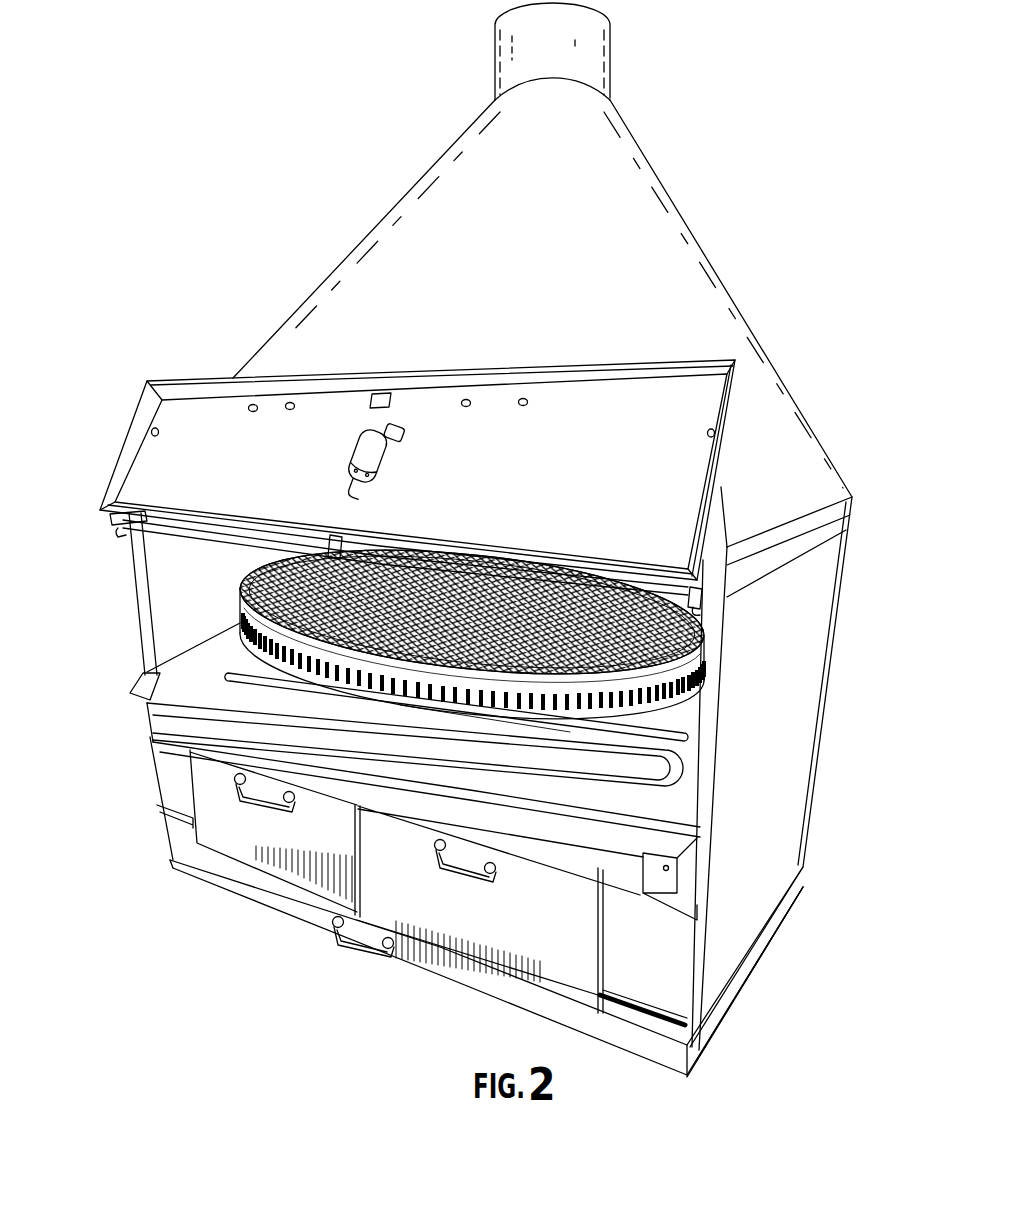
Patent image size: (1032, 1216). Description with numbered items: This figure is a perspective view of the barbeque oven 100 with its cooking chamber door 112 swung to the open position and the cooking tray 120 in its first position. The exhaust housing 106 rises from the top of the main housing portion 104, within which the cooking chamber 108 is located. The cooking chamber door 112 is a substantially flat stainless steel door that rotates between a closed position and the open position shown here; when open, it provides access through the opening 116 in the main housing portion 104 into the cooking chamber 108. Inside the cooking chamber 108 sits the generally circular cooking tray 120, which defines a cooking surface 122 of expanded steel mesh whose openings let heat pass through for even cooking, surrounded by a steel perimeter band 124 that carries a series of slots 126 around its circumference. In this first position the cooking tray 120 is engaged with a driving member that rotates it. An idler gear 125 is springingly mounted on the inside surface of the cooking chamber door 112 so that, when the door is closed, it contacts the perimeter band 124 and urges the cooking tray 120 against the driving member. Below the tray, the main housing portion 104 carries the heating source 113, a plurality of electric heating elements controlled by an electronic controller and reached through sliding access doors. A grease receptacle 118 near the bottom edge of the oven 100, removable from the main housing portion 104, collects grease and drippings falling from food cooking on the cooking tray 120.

The barbeque oven 100 is at (333, 158).
The main housing portion 104 is at (790, 752).
The exhaust housing 106 is at (624, 241).
The cooking chamber 108 is at (203, 560).
The cooking chamber door 112 is at (212, 436).
The heating source 113 is at (437, 732).
The opening 116 is at (140, 565).
The grease receptacle 118 is at (303, 905).
The cooking tray 120 is at (190, 613).
The cooking surface 122 is at (150, 700).
The perimeter band 124 is at (662, 684).
The idler gear 125 is at (391, 458).
The slots 126 is at (643, 690).